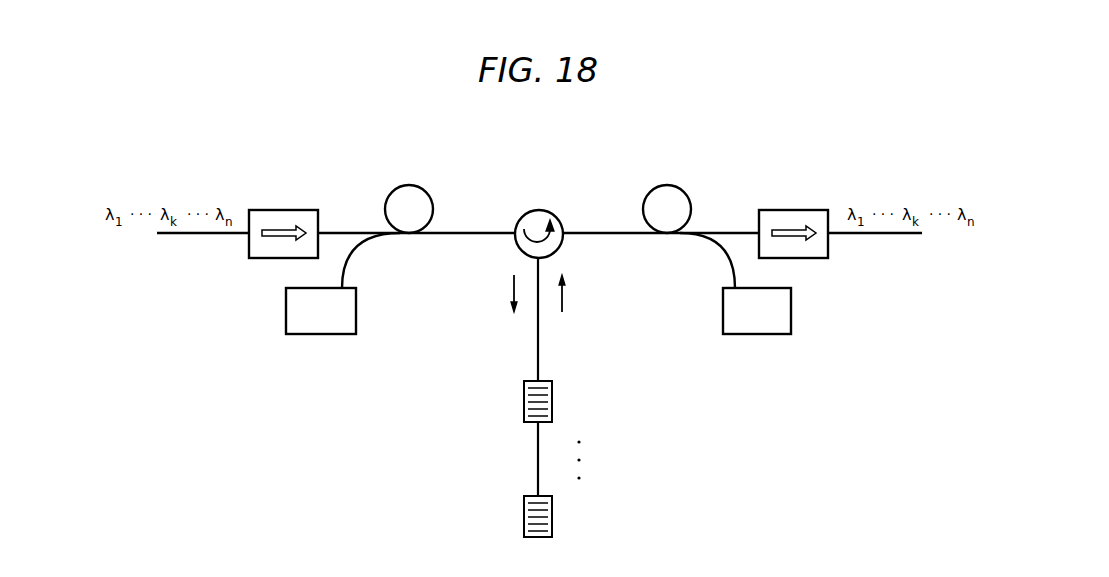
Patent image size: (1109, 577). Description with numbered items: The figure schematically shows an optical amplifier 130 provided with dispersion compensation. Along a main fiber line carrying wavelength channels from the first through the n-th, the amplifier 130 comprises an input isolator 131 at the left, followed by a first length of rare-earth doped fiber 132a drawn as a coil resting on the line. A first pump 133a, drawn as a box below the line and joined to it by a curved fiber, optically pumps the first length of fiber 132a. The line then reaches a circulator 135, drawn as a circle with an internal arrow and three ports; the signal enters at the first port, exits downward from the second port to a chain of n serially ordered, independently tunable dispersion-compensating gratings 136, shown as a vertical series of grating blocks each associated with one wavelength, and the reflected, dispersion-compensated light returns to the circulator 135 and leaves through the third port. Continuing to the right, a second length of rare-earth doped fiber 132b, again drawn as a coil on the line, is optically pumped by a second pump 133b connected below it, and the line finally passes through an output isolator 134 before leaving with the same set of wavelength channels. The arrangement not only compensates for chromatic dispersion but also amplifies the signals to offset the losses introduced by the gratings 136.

The amplifier 130 is at (432, 143).
The input isolator 131 is at (275, 210).
The first length of rare-earth doped fiber 132a is at (432, 203).
The second length of rare-earth doped fiber 132b is at (689, 202).
The first pump 133a is at (356, 305).
The second pump 133b is at (793, 305).
The output isolator 134 is at (787, 210).
The circulator 135 is at (550, 211).
The dispersion-compensating gratings 136 is at (517, 368).